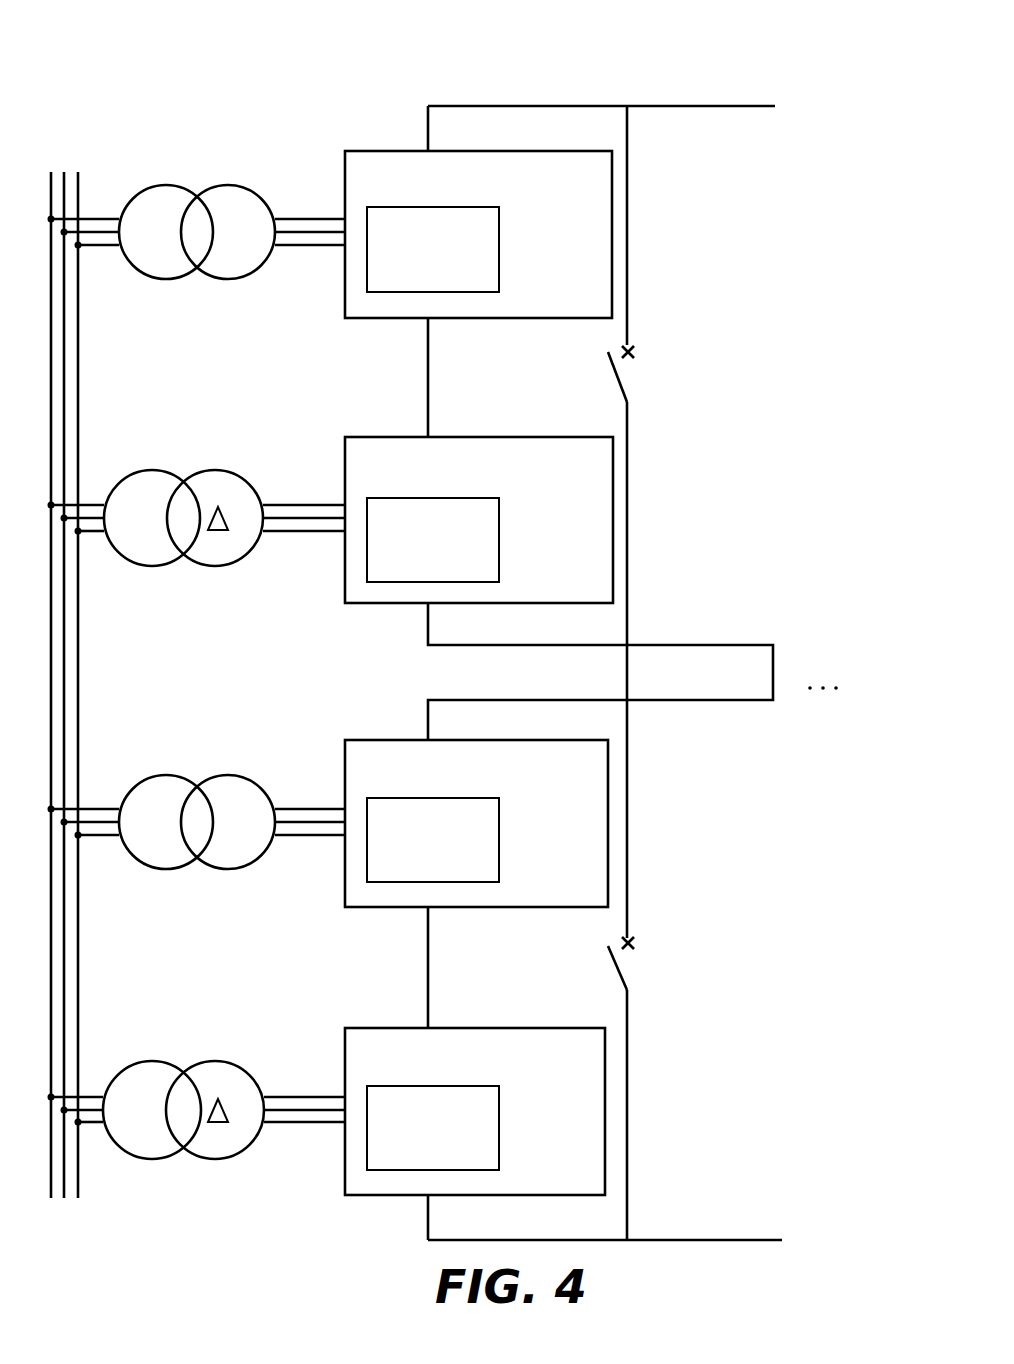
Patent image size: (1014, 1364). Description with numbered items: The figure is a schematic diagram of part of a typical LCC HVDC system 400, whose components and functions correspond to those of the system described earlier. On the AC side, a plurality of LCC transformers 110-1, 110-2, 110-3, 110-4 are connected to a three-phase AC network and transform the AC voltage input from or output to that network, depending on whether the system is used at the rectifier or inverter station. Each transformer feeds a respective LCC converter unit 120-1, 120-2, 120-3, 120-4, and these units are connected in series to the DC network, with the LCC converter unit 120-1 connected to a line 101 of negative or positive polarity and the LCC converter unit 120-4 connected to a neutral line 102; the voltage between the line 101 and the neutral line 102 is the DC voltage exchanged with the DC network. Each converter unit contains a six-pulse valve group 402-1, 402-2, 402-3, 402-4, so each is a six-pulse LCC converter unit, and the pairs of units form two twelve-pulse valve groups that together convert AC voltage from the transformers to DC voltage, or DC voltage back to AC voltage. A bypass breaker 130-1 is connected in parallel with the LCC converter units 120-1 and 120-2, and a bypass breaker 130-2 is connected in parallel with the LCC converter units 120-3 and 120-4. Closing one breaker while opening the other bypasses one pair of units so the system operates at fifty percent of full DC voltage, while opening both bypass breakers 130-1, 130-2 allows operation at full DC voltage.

The LCC HVDC system 400 is at (80, 56).
The line of negative or positive polarity 101 is at (697, 104).
The neutral line 102 is at (698, 1238).
The LCC transformer 110-1 is at (196, 193).
The LCC transformer 110-2 is at (183, 478).
The LCC transformer 110-3 is at (196, 782).
The LCC transformer 110-4 is at (183, 1072).
The LCC converter unit 120-1 is at (478, 217).
The LCC converter unit 120-2 is at (479, 501).
The LCC converter unit 120-3 is at (476, 806).
The LCC converter unit 120-4 is at (475, 1094).
The bypass breaker 130-1 is at (654, 378).
The bypass breaker 130-2 is at (662, 964).
The six-pulse valve group 402-1 is at (503, 272).
The six-pulse valve group 402-2 is at (503, 562).
The six-pulse valve group 402-3 is at (503, 863).
The six-pulse valve group 402-4 is at (503, 1151).